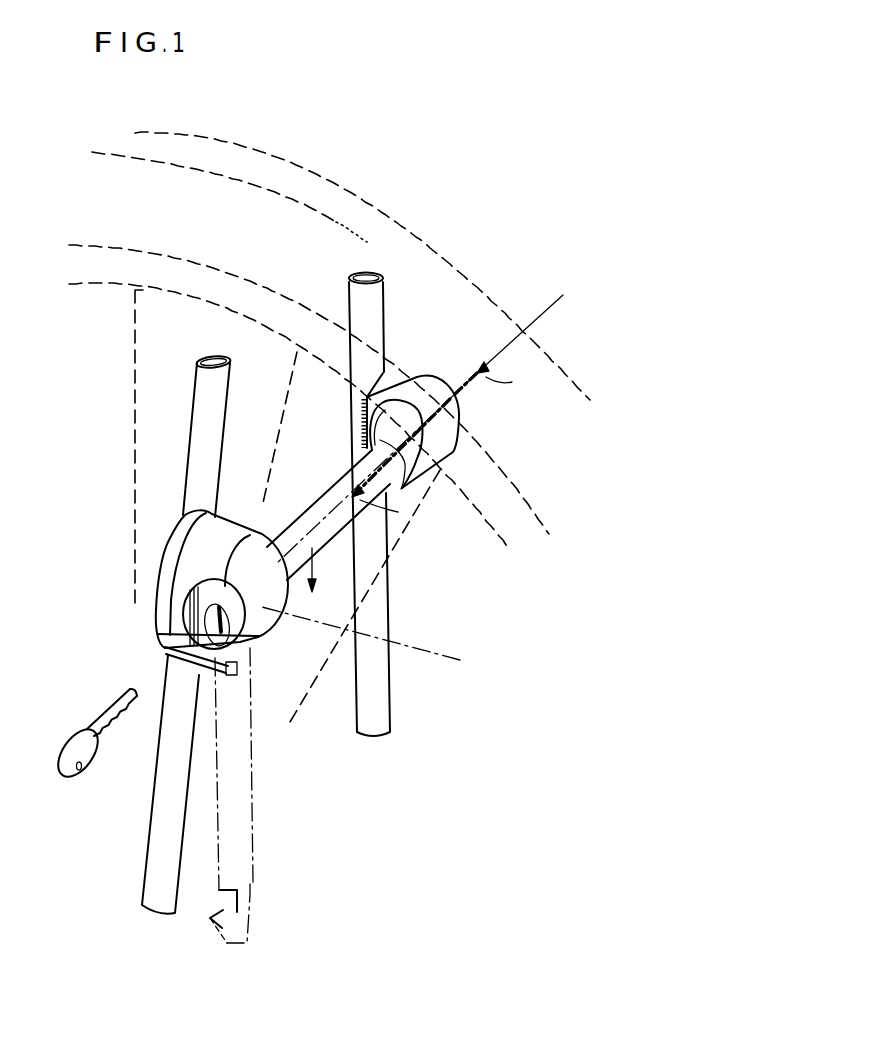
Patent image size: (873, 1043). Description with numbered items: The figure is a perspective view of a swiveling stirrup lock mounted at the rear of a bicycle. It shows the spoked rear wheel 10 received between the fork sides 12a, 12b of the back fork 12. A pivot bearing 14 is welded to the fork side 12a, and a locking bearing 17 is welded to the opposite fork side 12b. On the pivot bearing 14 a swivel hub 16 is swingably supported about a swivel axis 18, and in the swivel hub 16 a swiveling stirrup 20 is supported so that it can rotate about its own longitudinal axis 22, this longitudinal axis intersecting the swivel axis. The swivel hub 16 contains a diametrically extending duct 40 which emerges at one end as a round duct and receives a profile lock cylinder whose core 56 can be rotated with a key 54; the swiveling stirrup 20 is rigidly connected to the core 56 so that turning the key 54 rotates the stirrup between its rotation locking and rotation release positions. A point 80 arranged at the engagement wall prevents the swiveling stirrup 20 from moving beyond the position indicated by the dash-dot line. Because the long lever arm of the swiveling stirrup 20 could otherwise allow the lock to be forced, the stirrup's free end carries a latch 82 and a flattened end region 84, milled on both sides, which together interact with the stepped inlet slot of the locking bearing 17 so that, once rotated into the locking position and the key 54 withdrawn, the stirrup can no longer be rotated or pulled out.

The rear wheel 10 is at (343, 205).
The back fork 12 is at (294, 579).
The fork side 12a is at (205, 418).
The fork side 12b is at (372, 307).
The pivot bearing 14 is at (168, 570).
The swivel hub 16 is at (262, 613).
The locking bearing 17 is at (446, 440).
The swivel axis 18 is at (374, 641).
The swiveling stirrup 20 is at (322, 497).
The longitudinal axis 22 is at (429, 411).
The duct 40 is at (160, 634).
The key 54 is at (73, 774).
The core 56 is at (248, 636).
The point 80 is at (240, 676).
The latch 82 is at (212, 942).
The end region 84 is at (228, 905).